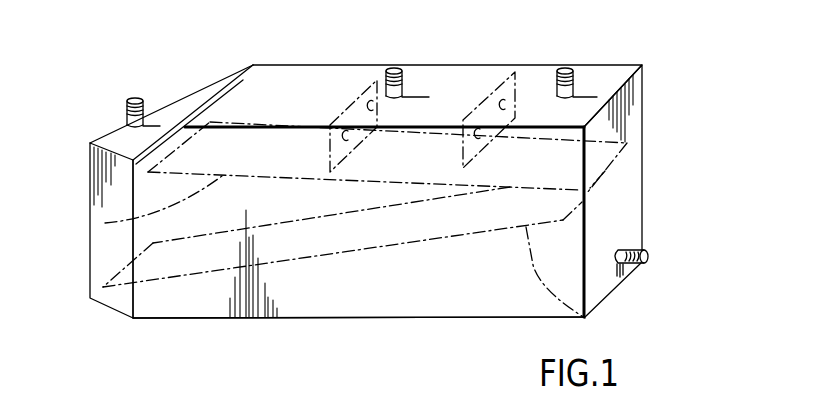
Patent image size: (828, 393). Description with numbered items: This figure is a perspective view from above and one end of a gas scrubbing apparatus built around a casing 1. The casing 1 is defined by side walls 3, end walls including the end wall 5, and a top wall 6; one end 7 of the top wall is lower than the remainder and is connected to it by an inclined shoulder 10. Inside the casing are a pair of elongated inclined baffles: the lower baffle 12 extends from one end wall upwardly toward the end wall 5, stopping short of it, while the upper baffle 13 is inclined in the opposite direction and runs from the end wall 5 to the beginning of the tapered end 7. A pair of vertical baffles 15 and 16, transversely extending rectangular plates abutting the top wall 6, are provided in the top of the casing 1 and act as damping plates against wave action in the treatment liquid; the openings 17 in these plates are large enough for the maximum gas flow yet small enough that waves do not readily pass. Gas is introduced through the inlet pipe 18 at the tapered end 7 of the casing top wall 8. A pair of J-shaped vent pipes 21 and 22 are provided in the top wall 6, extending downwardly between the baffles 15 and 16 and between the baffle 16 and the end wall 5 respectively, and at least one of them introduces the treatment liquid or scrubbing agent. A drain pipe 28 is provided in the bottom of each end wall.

The casing 1 is at (383, 167).
The side walls 3 is at (475, 286).
The end wall 5 is at (625, 207).
The top wall 6 is at (299, 100).
The tapered end 7 is at (93, 143).
The casing top wall 8 is at (173, 113).
The inclined shoulder 10 is at (230, 77).
The lower baffle 12 is at (586, 318).
The upper baffle 13 is at (105, 223).
The vertical baffle 15 is at (348, 98).
The vertical baffle 16 is at (490, 90).
The openings 17 is at (364, 92).
The inlet pipe 18 is at (133, 98).
The vent pipe 21 is at (401, 70).
The vent pipe 22 is at (575, 80).
The drain pipe 28 is at (646, 265).